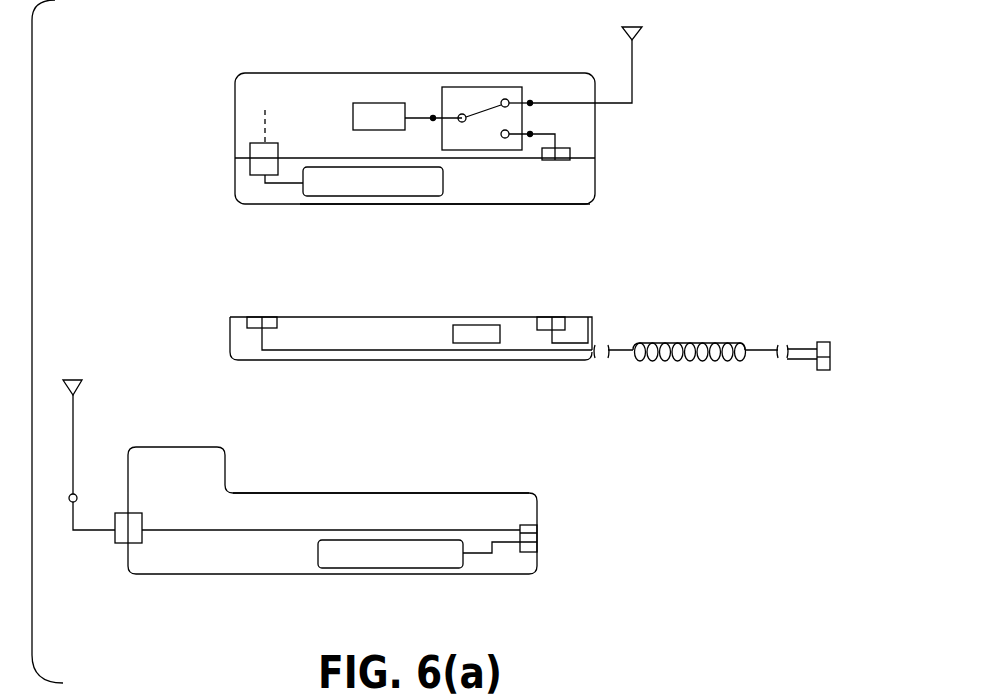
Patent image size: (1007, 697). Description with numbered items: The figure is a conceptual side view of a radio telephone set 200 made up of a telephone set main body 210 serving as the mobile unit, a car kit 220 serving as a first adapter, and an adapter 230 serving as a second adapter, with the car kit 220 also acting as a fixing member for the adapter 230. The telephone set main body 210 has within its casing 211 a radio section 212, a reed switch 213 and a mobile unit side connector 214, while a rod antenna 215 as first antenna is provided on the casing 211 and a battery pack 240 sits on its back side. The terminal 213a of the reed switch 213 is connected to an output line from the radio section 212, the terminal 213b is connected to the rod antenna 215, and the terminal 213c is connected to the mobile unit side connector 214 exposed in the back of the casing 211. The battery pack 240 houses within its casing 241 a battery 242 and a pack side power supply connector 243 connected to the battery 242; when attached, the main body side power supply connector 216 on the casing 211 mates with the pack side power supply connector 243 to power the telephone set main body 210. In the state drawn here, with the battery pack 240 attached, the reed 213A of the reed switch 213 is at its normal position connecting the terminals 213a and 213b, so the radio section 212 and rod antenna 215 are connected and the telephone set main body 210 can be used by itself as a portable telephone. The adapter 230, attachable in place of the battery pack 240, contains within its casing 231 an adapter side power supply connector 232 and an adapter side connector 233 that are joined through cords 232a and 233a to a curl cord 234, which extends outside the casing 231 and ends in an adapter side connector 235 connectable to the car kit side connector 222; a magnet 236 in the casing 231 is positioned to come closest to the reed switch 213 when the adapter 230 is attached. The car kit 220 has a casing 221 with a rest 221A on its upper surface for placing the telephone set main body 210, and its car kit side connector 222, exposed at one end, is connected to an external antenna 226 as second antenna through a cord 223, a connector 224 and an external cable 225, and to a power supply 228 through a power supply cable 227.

The radio telephone set 200 is at (140, 256).
The telephone set main body 210 is at (224, 66).
The casing 211 is at (293, 73).
The radio section 212 is at (375, 103).
The reed switch 213 is at (501, 79).
The reed 213A is at (483, 115).
The terminal 213a is at (433, 118).
The terminal 213b is at (531, 102).
The terminal 213c is at (532, 130).
The mobile unit side connector 214 is at (570, 155).
The rod antenna 215 is at (633, 68).
The main body side power supply connector 216 is at (250, 150).
The pack side power supply connector 243 is at (252, 170).
The battery 242 is at (388, 196).
The casing 241 is at (508, 204).
The battery pack 240 is at (604, 211).
The adapter 230 is at (221, 342).
The casing 231 is at (338, 317).
The adapter side power supply connector 232 is at (252, 320).
The cord 232a is at (368, 358).
The magnet 236 is at (473, 325).
The adapter side connector 233 is at (560, 322).
The cord 233a is at (573, 342).
The curl cord 234 is at (715, 336).
The adapter side connector 235 is at (822, 342).
The car kit 220 is at (549, 488).
The casing 221 is at (258, 574).
The rest 221A is at (403, 478).
The cord 223 is at (262, 530).
The connector 224 is at (124, 555).
The external cable 225 is at (71, 529).
The external antenna 226 is at (74, 428).
The power supply 228 is at (397, 568).
The power supply cable 227 is at (510, 545).
The car kit side connector 222 is at (535, 545).